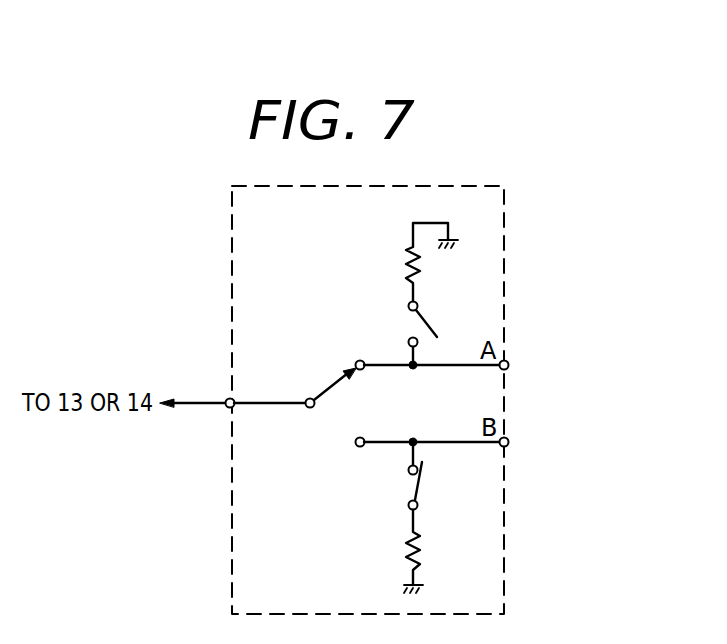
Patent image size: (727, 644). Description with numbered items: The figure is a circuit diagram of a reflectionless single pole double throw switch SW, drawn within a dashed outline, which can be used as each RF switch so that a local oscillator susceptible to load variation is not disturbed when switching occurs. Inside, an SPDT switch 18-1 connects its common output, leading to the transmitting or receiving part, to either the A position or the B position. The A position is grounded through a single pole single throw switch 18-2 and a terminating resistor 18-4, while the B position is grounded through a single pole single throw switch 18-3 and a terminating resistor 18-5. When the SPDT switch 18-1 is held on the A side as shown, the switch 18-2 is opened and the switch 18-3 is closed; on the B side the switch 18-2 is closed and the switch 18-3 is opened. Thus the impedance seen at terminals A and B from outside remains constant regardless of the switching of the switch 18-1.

The reflectionless SPDT switch SW is at (504, 244).
The SPDT switch 18-1 is at (333, 384).
The single pole single throw switch 18-2 is at (425, 319).
The single pole single throw switch 18-3 is at (423, 487).
The terminating resistor 18-4 is at (400, 262).
The terminating resistor 18-5 is at (405, 551).